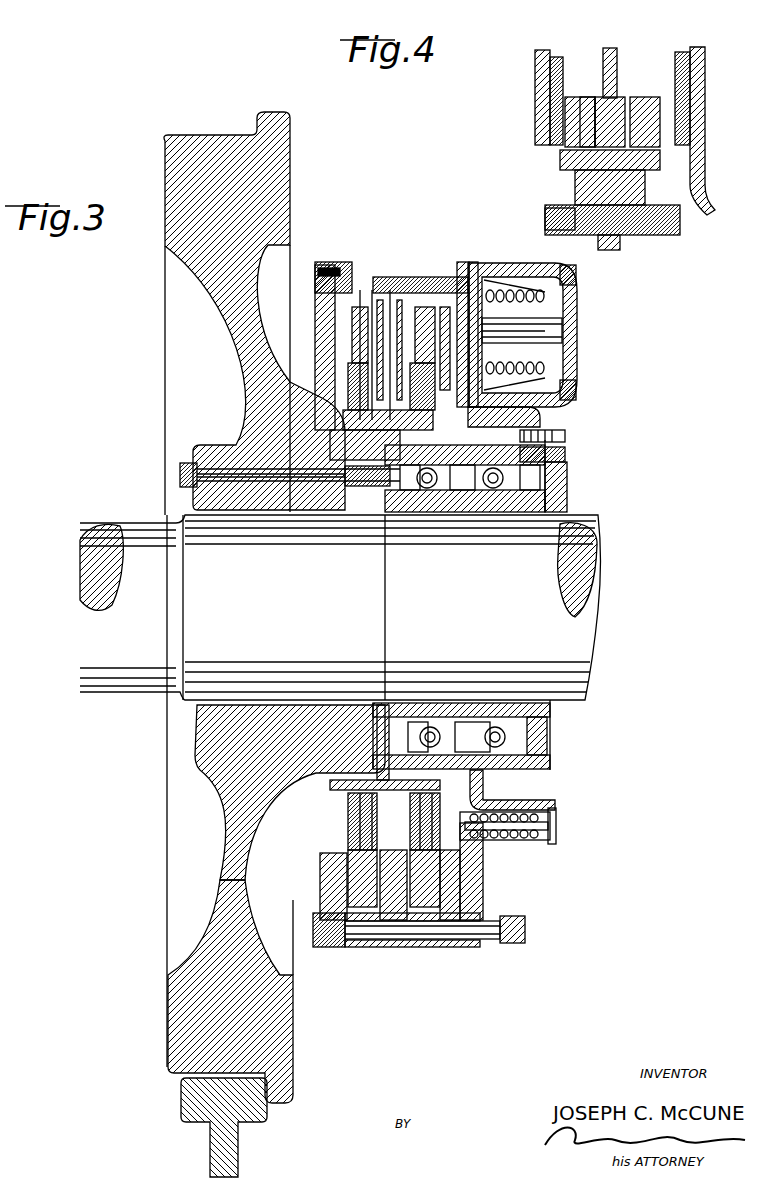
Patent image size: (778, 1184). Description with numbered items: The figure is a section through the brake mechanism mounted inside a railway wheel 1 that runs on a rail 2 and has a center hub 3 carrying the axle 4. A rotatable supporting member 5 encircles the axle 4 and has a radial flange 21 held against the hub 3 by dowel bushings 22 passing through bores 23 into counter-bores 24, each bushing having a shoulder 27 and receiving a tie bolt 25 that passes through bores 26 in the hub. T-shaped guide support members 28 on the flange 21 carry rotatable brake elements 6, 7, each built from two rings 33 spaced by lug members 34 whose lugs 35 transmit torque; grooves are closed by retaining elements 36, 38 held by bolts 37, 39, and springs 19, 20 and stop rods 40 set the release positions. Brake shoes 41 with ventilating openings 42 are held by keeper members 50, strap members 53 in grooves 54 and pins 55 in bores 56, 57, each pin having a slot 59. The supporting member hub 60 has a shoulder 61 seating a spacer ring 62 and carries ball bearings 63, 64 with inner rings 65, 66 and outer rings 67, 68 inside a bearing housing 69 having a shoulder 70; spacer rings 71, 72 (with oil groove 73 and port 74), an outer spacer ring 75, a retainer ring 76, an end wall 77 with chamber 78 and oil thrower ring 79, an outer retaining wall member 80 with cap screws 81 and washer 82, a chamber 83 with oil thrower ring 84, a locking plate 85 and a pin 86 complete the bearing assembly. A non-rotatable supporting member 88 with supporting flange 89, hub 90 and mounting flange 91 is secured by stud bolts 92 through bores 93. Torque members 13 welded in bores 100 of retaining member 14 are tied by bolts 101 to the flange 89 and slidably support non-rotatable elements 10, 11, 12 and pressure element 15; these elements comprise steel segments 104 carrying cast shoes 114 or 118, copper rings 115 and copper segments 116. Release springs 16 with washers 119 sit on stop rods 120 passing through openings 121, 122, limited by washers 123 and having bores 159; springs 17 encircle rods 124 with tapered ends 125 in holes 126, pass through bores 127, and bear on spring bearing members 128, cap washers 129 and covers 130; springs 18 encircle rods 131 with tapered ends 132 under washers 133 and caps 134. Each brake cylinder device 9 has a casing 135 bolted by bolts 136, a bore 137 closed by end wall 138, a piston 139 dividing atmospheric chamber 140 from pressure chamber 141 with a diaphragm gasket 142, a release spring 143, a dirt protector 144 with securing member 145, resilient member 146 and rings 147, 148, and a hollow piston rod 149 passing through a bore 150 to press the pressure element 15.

In FIG. 3, the wheel 1 is at (185, 1005).
In FIG. 3, the rail 2 is at (195, 1095).
In FIG. 3, the center hub 3 is at (205, 730).
In FIG. 3, the axle 4 is at (105, 623).
In FIG. 3, the rotatable supporting member 5 is at (410, 705).
In FIG. 3, the rotatable friction brake element 6 is at (365, 260).
In FIG. 4, the rotatable friction brake element 6 is at (570, 95).
In FIG. 3, the rotatable friction brake element 7 is at (430, 275).
In FIG. 4, the rotatable friction brake element 7 is at (640, 95).
In FIG. 3, the fluid pressure brake cylinder device 9 is at (592, 322).
In FIG. 3, the non-rotatable friction braking element 10 is at (335, 270).
In FIG. 3, the non-rotatable friction braking element 11 is at (392, 275).
In FIG. 3, the non-rotatable friction braking element 12 is at (462, 262).
In FIG. 3, the tubular guide support torque member 13 is at (468, 948).
In FIG. 3, the retaining member 14 is at (322, 270).
In FIG. 3, the pressure element 15 is at (480, 875).
In FIG. 4, the pressure element 15 is at (688, 50).
In FIG. 3, the compression release spring 16 is at (440, 275).
In FIG. 3, the compression release spring 17 is at (530, 815).
In FIG. 3, the compression release spring 18 is at (325, 320).
In FIG. 4, the compression release spring 19 is at (615, 245).
In FIG. 3, the compression release spring 20 is at (330, 452).
In FIG. 3, the radial flange 21 is at (330, 505).
In FIG. 3, the dowel bushing 22 is at (345, 510).
In FIG. 3, the bore 23 is at (372, 505).
In FIG. 3, the counter-bore 24 is at (305, 505).
In FIG. 3, the tie bolt 25 is at (228, 505).
In FIG. 3, the bore 26 is at (226, 468).
In FIG. 3, the shoulder 27 is at (352, 505).
In FIG. 3, the torque transmitting guide support member 28 is at (370, 765).
In FIG. 3, the ring 33 is at (380, 372).
In FIG. 4, the ring 33 is at (570, 150).
In FIG. 3, the lug member 34 is at (360, 382).
In FIG. 4, the lug member 34 is at (590, 165).
In FIG. 3, the lug 35 is at (360, 470).
In FIG. 4, the lug 35 is at (635, 236).
In FIG. 3, the retaining element 36 is at (345, 432).
In FIG. 4, the retaining element 36 is at (570, 200).
In FIG. 4, the bolt 37 is at (560, 205).
In FIG. 3, the retaining element 38 is at (520, 796).
In FIG. 4, the retaining element 38 is at (665, 215).
In FIG. 3, the bolt 39 is at (560, 786).
In FIG. 4, the bolt 39 is at (670, 230).
In FIG. 4, the stop rod 40 is at (650, 236).
In FIG. 3, the brake shoe 41 is at (335, 905).
In FIG. 4, the brake shoe 41 is at (562, 95).
In FIG. 3, the ventilating opening 42 is at (390, 946).
In FIG. 3, the keeper member 50 is at (352, 346).
In FIG. 4, the keeper member 50 is at (560, 100).
In FIG. 3, the strap member 53 is at (360, 366).
In FIG. 4, the strap member 53 is at (567, 115).
In FIG. 3, the groove 54 is at (280, 416).
In FIG. 4, the groove 54 is at (665, 200).
In FIG. 3, the pin 55 is at (340, 420).
In FIG. 4, the pin 55 is at (575, 170).
In FIG. 4, the bore 56 is at (590, 180).
In FIG. 4, the bore 57 is at (590, 195).
In FIG. 4, the transverse slot 59 is at (655, 175).
In FIG. 3, the supporting member hub 60 is at (425, 505).
In FIG. 3, the annular shoulder 61 is at (392, 512).
In FIG. 3, the spacer ring 62 is at (395, 705).
In FIG. 3, the ball bearing 63 is at (430, 735).
In FIG. 3, the ball bearing 64 is at (500, 740).
In FIG. 3, the inner ring 65 is at (430, 720).
In FIG. 3, the inner ring 66 is at (536, 705).
In FIG. 3, the outer ring 67 is at (382, 775).
In FIG. 3, the outer ring 68 is at (550, 735).
In FIG. 3, the bearing housing 69 is at (445, 512).
In FIG. 3, the shoulder 70 is at (380, 760).
In FIG. 3, the intermediate spacer ring 71 is at (462, 735).
In FIG. 3, the intermediate spacer ring 72 is at (495, 720).
In FIG. 3, the oil groove 73 is at (462, 505).
In FIG. 3, the through port 74 is at (465, 725).
In FIG. 3, the outer end spacer ring 75 is at (546, 705).
In FIG. 3, the retainer ring 76 is at (550, 715).
In FIG. 3, the flange end wall 77 is at (383, 690).
In FIG. 3, the chamber 78 is at (410, 512).
In FIG. 3, the oil thrower ring 79 is at (385, 700).
In FIG. 3, the outer retaining wall member 80 is at (545, 752).
In FIG. 3, the cap screw 81 is at (545, 768).
In FIG. 3, the washer 82 is at (550, 470).
In FIG. 3, the chamber 83 is at (485, 512).
In FIG. 3, the oil thrower ring 84 is at (515, 505).
In FIG. 3, the locking plate 85 is at (550, 495).
In FIG. 3, the pin 86 is at (545, 510).
In FIG. 4, the non-rotatable supporting member 88 is at (705, 195).
In FIG. 3, the supporting flange 89 is at (560, 415).
In FIG. 4, the supporting flange 89 is at (705, 55).
In FIG. 3, the hub 90 is at (555, 432).
In FIG. 3, the mounting flange 91 is at (545, 450).
In FIG. 3, the stud bolt 92 is at (565, 440).
In FIG. 3, the bore 93 is at (560, 456).
In FIG. 3, the through bore 100 is at (325, 935).
In FIG. 3, the tie bolt 101 is at (470, 950).
In FIG. 3, the arcuate segment 104 is at (388, 272).
In FIG. 4, the arcuate segment 104 is at (545, 55).
In FIG. 3, the brake shoe 114 is at (345, 336).
In FIG. 4, the brake shoe 114 is at (555, 80).
In FIG. 3, the heat dissipating ring 115 is at (470, 915).
In FIG. 4, the heat dissipating ring 115 is at (540, 60).
In FIG. 3, the heat dissipating segment 116 is at (393, 275).
In FIG. 4, the heat dissipating segment 116 is at (600, 100).
In FIG. 3, the brake shoe 118 is at (370, 332).
In FIG. 4, the brake shoe 118 is at (598, 95).
In FIG. 3, the washer member 119 is at (412, 275).
In FIG. 3, the stop rod 120 is at (471, 262).
In FIG. 3, the opening 121 is at (466, 262).
In FIG. 3, the opening 122 is at (365, 300).
In FIG. 3, the washer 123 is at (385, 275).
In FIG. 3, the stop rod 124 is at (548, 840).
In FIG. 3, the tapered end 125 is at (490, 845).
In FIG. 3, the tapered hole 126 is at (545, 808).
In FIG. 3, the bore 127 is at (475, 855).
In FIG. 3, the spring bearing member 128 is at (520, 840).
In FIG. 3, the cap washer member 129 is at (550, 822).
In FIG. 3, the spring cover 130 is at (545, 832).
In FIG. 3, the rod 131 is at (320, 300).
In FIG. 3, the tapered end 132 is at (322, 306).
In FIG. 3, the washer member 133 is at (318, 278).
In FIG. 3, the removable cap 134 is at (318, 290).
In FIG. 4, the casing 135 is at (560, 225).
In FIG. 3, the bolt 136 is at (578, 270).
In FIG. 3, the bore 137 is at (565, 268).
In FIG. 3, the end wall 138 is at (570, 358).
In FIG. 3, the piston 139 is at (575, 386).
In FIG. 3, the atmospheric chamber 140 is at (520, 410).
In FIG. 3, the pressure chamber 141 is at (560, 285).
In FIG. 3, the diaphragm gasket 142 is at (560, 375).
In FIG. 3, the piston release compression spring 143 is at (570, 336).
In FIG. 3, the dirt protector 144 is at (520, 265).
In FIG. 3, the securing member 145 is at (560, 350).
In FIG. 3, the resilient member 146 is at (560, 400).
In FIG. 3, the retainer ring 147 is at (560, 295).
In FIG. 3, the retaining ring 148 is at (532, 280).
In FIG. 3, the piston rod 149 is at (560, 330).
In FIG. 3, the bore 150 is at (565, 310).
In FIG. 3, the bore 159 is at (420, 275).